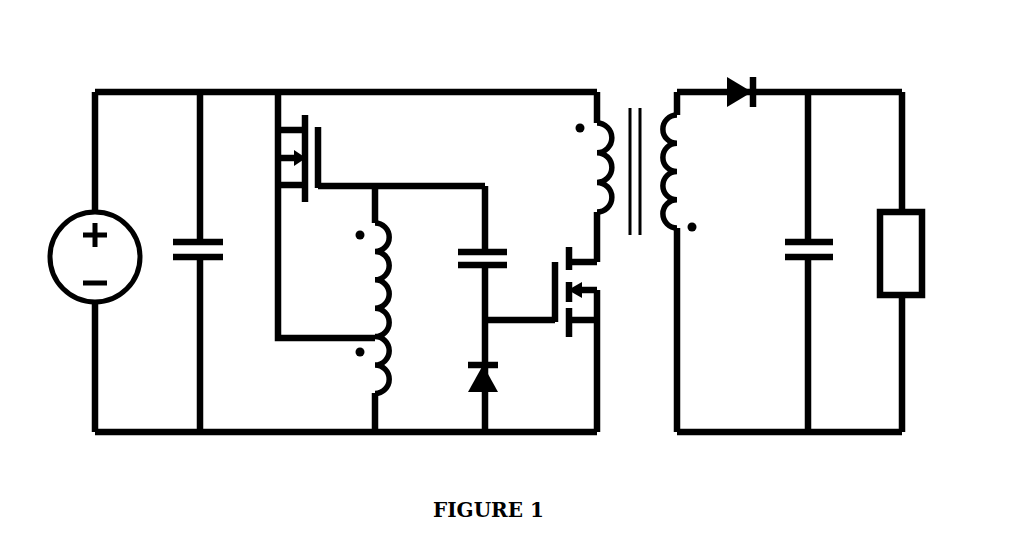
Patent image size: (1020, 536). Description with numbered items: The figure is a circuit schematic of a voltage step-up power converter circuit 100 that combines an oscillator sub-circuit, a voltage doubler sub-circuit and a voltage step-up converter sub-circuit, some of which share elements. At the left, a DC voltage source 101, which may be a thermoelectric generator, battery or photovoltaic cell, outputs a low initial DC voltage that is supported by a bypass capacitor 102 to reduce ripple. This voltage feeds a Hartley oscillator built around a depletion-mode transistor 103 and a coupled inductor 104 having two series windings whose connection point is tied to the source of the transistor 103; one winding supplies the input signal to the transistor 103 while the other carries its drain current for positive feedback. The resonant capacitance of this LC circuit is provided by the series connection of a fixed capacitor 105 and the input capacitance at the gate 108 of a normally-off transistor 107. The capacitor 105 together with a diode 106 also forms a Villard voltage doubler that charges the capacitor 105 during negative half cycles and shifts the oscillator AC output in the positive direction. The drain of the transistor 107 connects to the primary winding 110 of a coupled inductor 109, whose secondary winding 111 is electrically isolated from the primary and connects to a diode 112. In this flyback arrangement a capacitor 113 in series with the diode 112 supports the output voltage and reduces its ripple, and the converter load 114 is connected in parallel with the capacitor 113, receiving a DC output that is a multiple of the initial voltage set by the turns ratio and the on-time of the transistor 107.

The voltage step-up power converter circuit 100 is at (71, 60).
The DC voltage source 101 is at (97, 270).
The bypass capacitor 102 is at (209, 265).
The transistor 103 is at (276, 158).
The coupled inductor 104 is at (397, 309).
The capacitor 105 is at (493, 225).
The diode 106 is at (469, 392).
The transistor 107 is at (598, 292).
The gate 108 is at (520, 309).
The coupled inductor 109 is at (638, 183).
The primary winding 110 is at (583, 167).
The secondary winding 111 is at (693, 173).
The diode 112 is at (743, 105).
The capacitor 113 is at (789, 252).
The converter load 114 is at (890, 240).